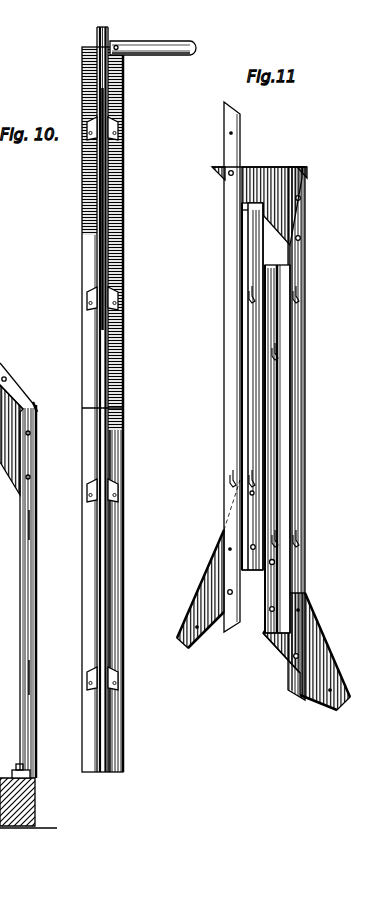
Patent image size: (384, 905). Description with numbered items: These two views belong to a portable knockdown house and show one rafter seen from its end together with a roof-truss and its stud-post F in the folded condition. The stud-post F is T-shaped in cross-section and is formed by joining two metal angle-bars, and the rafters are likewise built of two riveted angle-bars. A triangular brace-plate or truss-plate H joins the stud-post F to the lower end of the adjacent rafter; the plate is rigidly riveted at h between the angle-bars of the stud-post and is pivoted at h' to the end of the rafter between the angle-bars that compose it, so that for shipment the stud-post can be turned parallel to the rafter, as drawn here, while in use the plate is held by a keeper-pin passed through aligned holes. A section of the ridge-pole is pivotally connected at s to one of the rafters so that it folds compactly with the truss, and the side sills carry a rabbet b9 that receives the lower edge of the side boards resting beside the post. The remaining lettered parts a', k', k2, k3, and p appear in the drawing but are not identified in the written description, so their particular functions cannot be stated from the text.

In FIG. 10, the stud-post F is at (110, 409).
In FIG. 11, the stud-post F is at (252, 383).
In FIG. 10, the brace-plate H is at (97, 33).
In FIG. 11, the brace-plate H is at (200, 577).
In FIG. 10, the channel flange a' is at (126, 409).
In FIG. 10, the rivet connection h is at (85, 405).
In FIG. 11, the rivet connection h is at (259, 448).
In FIG. 11, the pivot connection h' is at (275, 669).
In FIG. 10, the diagonal bar k' is at (18, 570).
In FIG. 11, the plate k2 is at (273, 178).
In FIG. 11, the bar k3 is at (228, 134).
In FIG. 10, the arm p is at (159, 49).
In FIG. 10, the pivotal connection s is at (120, 52).
In FIG. 10, the rabbet b9 is at (38, 780).